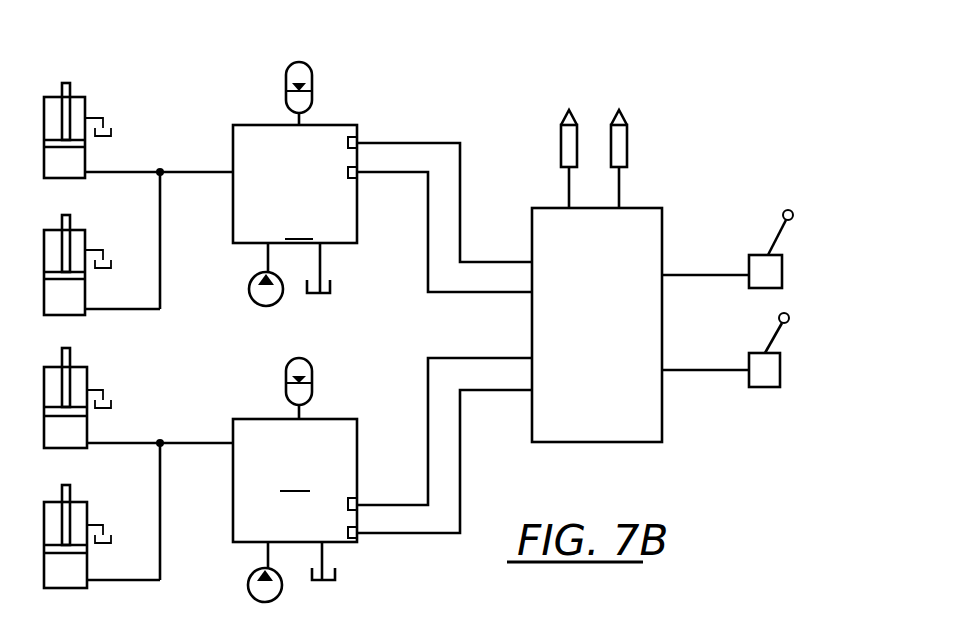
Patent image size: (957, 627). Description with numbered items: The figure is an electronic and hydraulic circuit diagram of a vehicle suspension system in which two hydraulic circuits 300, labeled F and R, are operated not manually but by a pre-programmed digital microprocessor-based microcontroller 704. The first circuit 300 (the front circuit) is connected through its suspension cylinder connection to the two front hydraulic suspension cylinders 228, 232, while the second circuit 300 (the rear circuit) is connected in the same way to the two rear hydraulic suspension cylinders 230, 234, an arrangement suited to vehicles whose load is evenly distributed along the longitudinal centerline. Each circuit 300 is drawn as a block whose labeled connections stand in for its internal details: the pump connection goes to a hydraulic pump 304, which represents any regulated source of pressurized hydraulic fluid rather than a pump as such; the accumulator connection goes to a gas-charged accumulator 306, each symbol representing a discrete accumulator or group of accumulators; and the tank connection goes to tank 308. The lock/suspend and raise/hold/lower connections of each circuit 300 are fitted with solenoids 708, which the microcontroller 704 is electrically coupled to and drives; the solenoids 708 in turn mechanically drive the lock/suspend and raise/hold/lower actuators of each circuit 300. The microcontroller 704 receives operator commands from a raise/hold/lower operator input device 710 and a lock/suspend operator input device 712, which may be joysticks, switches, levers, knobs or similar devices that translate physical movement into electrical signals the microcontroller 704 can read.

The front hydraulic suspension cylinder 228 is at (85, 112).
The rear hydraulic suspension cylinder 230 is at (85, 246).
The front hydraulic suspension cylinder 232 is at (87, 388).
The rear hydraulic suspension cylinder 234 is at (87, 520).
The hydraulic circuit 300 is at (326, 206).
The hydraulic pump 304 is at (249, 293).
The gas-charged accumulator 306 is at (312, 76).
The tank 308 is at (332, 290).
The microcontroller 704 is at (632, 297).
The solenoid 708 is at (347, 170).
The raise/hold/lower operator input device 710 is at (782, 270).
The lock/suspend operator input device 712 is at (780, 368).